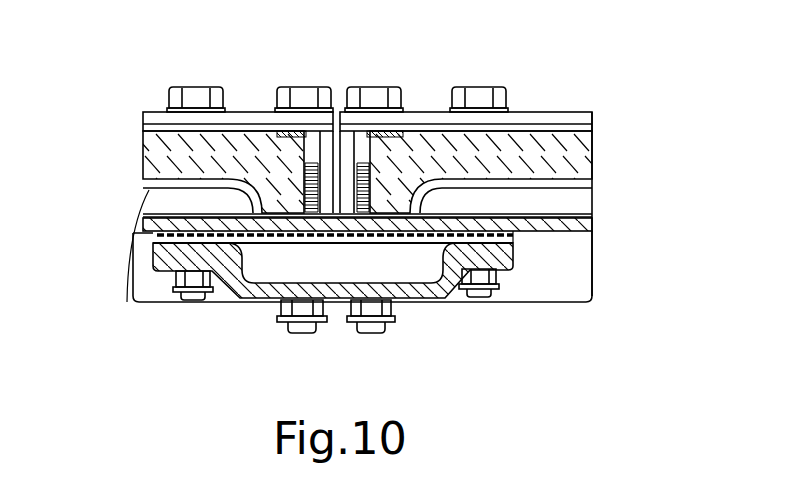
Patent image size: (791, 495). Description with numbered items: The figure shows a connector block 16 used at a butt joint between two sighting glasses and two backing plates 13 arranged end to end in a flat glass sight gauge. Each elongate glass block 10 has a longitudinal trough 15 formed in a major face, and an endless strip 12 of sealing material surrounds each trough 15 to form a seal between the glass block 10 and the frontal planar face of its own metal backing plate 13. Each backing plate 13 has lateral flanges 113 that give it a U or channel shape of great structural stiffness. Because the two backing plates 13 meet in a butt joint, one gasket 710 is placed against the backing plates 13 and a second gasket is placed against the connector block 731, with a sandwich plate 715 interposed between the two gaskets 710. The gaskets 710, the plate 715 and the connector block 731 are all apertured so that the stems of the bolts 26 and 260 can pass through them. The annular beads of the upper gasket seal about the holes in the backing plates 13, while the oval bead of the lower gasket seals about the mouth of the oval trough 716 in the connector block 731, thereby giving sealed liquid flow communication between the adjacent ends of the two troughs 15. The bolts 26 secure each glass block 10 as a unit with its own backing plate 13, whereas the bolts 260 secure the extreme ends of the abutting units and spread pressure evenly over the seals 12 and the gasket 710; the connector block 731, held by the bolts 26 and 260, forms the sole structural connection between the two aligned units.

The glass block 10 is at (152, 150).
The trough 15 is at (237, 197).
The bolt 260 is at (372, 95).
The bolt 26 is at (480, 95).
The gasket 710 is at (160, 222).
The plate 715 is at (157, 235).
The oval trough 716 is at (249, 298).
The connector block 731 is at (341, 299).
The connector block 16 is at (224, 309).
The endless strip of sealing material 12 is at (390, 244).
The backing plate 13 is at (547, 232).
The lateral flange 113 is at (580, 272).